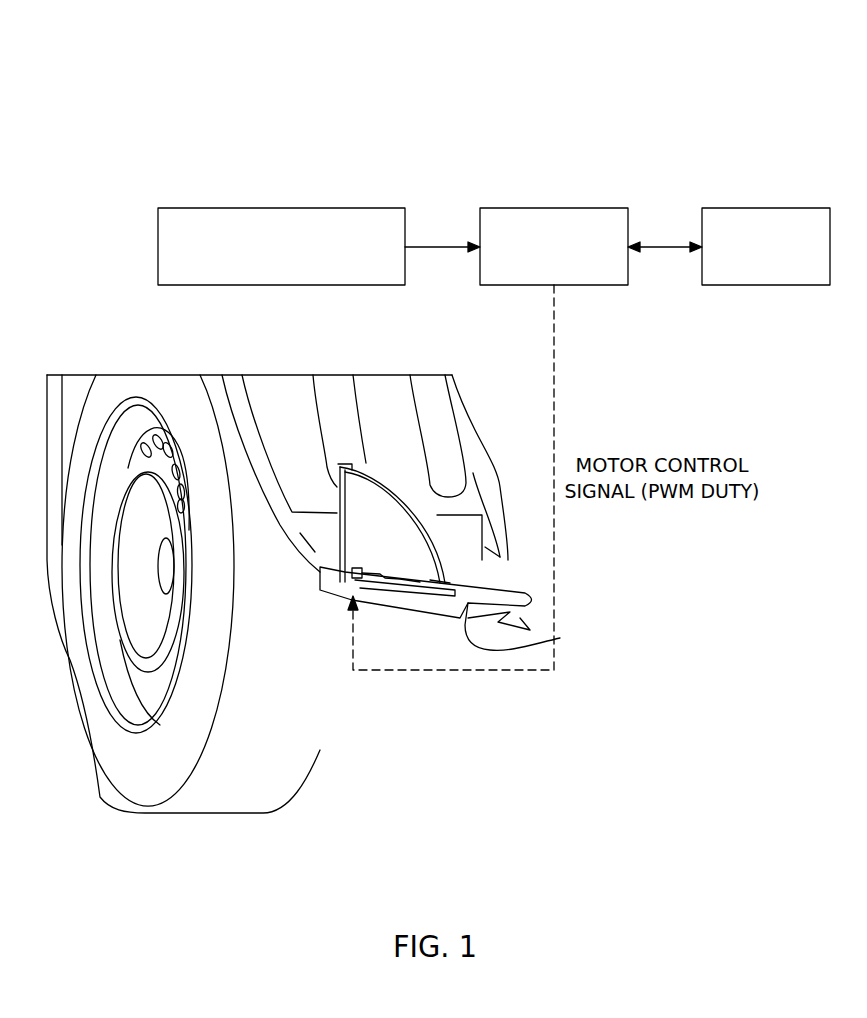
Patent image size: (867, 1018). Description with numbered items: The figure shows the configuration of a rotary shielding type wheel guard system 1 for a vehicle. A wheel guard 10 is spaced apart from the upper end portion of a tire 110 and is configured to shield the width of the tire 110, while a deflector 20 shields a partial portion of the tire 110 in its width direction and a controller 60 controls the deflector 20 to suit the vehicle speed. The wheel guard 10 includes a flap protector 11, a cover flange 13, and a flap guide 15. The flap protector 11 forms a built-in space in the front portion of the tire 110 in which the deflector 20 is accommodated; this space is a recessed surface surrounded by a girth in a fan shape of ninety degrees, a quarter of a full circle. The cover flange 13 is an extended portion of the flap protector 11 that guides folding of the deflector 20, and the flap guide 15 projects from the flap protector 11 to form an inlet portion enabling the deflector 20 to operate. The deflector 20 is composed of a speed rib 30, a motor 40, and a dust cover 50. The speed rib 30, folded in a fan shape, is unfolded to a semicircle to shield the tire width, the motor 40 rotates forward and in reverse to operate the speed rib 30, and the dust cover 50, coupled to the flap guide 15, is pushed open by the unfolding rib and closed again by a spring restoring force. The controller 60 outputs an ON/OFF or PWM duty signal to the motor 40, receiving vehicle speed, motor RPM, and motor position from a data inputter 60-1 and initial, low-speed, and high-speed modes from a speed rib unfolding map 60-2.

The rotary shielding type wheel guard system 1 is at (688, 92).
The wheel guard 10 is at (440, 390).
The flap protector 11 is at (392, 470).
The cover flange 13 is at (465, 647).
The flap guide 15 is at (500, 592).
The deflector 20 is at (409, 679).
The speed rib 30 is at (396, 565).
The motor 40 is at (358, 590).
The dust cover 50 is at (435, 582).
The controller 60 is at (565, 208).
The data inputter 60-1 is at (305, 208).
The speed rib unfolding map 60-2 is at (767, 208).
The tire 110 is at (117, 757).